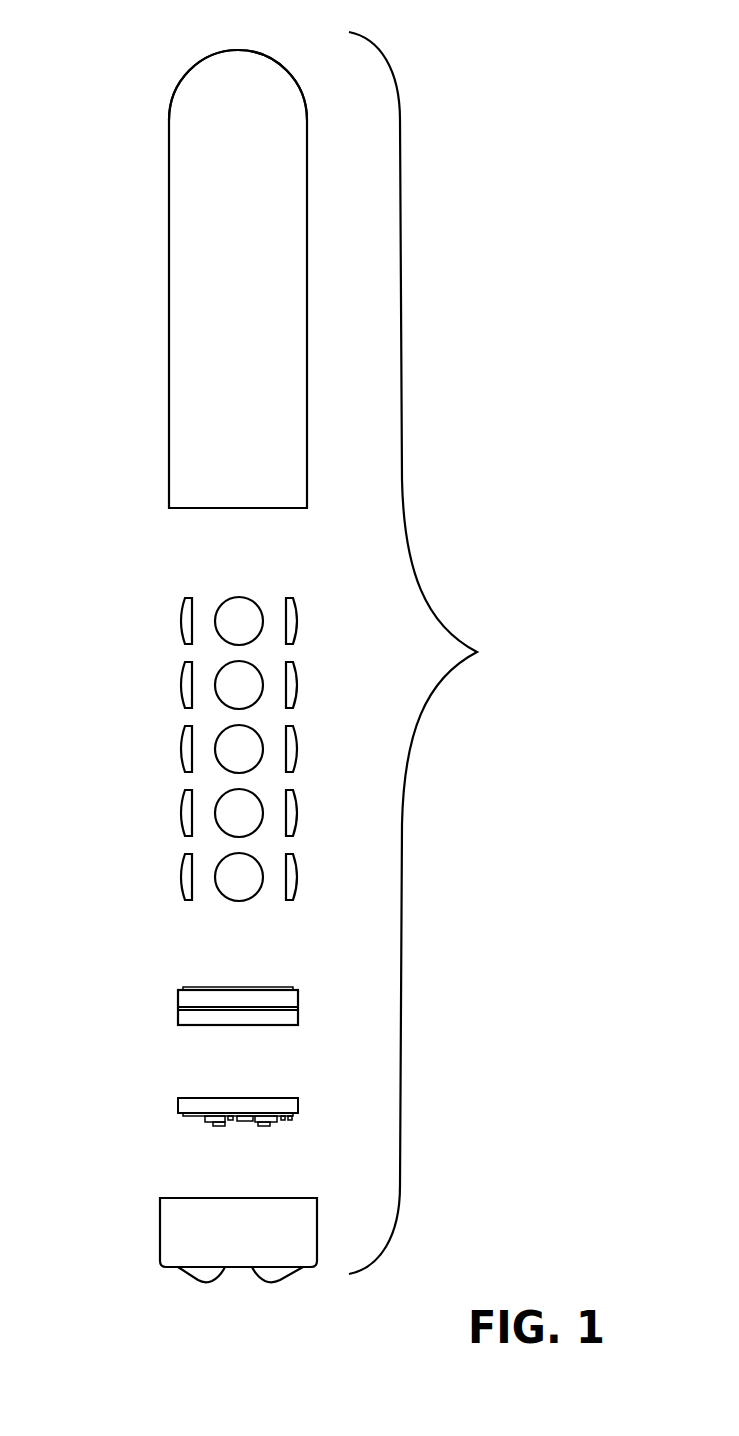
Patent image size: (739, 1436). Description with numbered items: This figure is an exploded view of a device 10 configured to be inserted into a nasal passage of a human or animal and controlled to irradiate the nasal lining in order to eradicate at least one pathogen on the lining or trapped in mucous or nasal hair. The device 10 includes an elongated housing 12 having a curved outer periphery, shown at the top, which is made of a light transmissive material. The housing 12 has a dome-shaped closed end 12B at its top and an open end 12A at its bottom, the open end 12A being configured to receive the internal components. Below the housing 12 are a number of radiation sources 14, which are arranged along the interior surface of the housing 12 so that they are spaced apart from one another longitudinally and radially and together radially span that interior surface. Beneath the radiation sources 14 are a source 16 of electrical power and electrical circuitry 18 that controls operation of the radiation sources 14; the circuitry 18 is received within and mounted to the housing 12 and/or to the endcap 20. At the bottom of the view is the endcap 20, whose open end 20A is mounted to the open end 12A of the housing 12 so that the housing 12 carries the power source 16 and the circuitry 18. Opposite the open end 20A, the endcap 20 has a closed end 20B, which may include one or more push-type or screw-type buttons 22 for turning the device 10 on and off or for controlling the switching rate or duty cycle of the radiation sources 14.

The device 10 is at (431, 653).
The housing 12 is at (169, 284).
The open end 12A is at (252, 508).
The closed end 12B is at (234, 50).
The radiation sources 14 is at (152, 750).
The source of electrical power 16 is at (155, 1009).
The electrical circuitry 18 is at (152, 1108).
The endcap 20 is at (140, 1233).
The open end 20A is at (275, 1198).
The closed end 20B is at (302, 1268).
The buttons 22 is at (195, 1282).